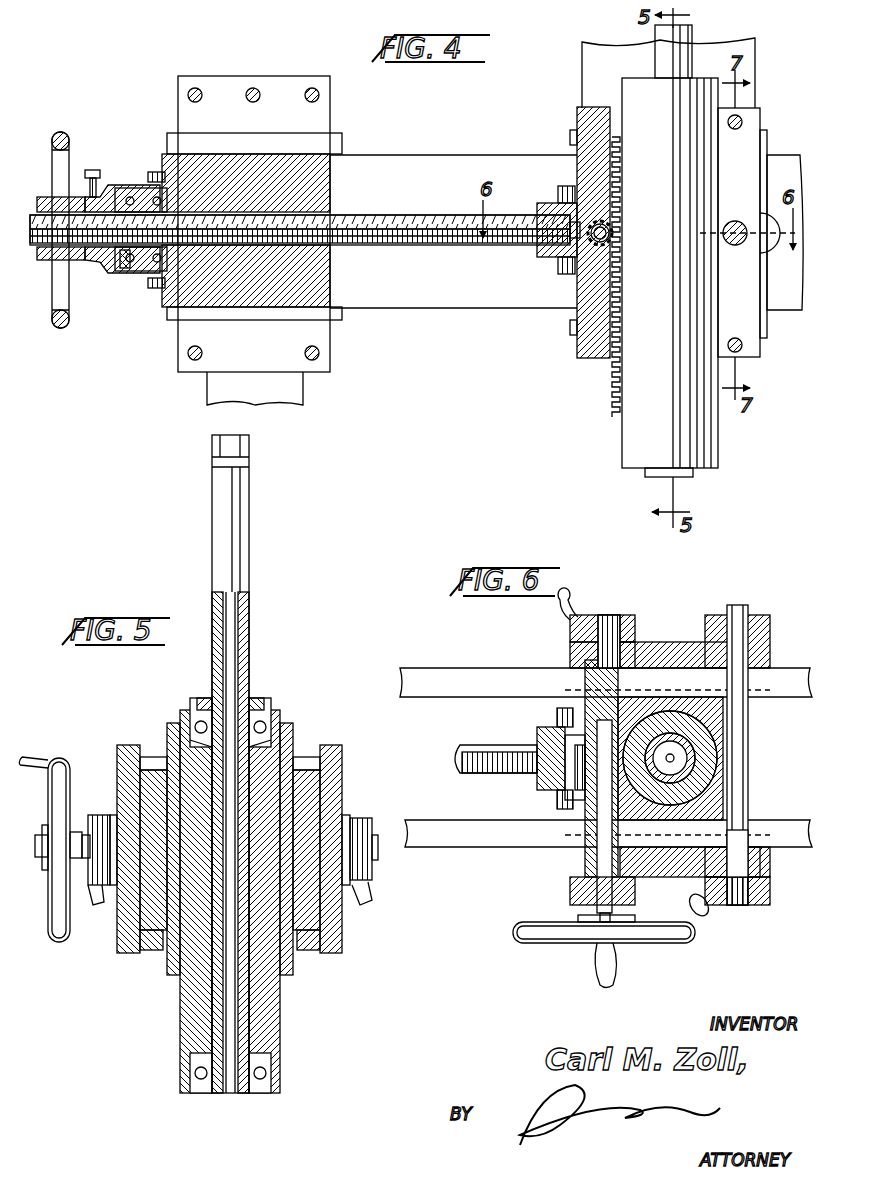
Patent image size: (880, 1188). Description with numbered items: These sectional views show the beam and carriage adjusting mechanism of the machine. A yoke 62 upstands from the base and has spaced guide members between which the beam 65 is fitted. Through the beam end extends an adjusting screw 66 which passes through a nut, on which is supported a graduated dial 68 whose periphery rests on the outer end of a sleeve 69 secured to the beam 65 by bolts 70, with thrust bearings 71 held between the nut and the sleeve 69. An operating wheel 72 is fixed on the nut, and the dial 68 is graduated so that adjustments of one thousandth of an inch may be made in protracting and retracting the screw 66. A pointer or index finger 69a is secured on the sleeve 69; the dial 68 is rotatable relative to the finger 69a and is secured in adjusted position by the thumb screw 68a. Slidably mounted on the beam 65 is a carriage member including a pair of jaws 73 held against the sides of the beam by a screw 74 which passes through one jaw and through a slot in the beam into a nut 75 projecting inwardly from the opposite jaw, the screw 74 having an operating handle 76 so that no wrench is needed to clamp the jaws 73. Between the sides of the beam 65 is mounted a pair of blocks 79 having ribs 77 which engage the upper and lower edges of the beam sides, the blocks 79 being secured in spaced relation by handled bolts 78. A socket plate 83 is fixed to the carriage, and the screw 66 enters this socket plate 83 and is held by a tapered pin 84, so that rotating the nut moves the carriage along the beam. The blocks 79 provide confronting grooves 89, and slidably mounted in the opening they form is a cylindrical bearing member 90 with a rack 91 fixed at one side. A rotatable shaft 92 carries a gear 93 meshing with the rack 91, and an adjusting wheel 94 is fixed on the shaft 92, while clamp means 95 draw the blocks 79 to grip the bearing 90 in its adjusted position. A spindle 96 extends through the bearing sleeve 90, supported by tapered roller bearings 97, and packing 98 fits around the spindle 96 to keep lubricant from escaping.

In FIG. 4, the yoke 62 is at (207, 375).
In FIG. 4, the beam 65 is at (478, 310).
In FIG. 5, the beam 65 is at (300, 805).
In FIG. 6, the beam 65 is at (422, 668).
In FIG. 4, the adjusting screw 66 is at (123, 262).
In FIG. 4, the graduated dial 68 is at (90, 262).
In FIG. 4, the thumb screw 68a is at (92, 185).
In FIG. 4, the sleeve 69 is at (132, 190).
In FIG. 4, the pointer or index finger 69a is at (94, 172).
In FIG. 4, the bolts 70 is at (178, 176).
In FIG. 4, the thrust bearings 71 is at (130, 262).
In FIG. 4, the operating wheel 72 is at (56, 140).
In FIG. 5, the jaws 73 is at (128, 782).
In FIG. 4, the screw 74 is at (725, 240).
In FIG. 6, the screw 74 is at (770, 870).
In FIG. 6, the nut 75 is at (735, 650).
In FIG. 6, the operating handle 76 is at (707, 914).
In FIG. 5, the ribs 77 is at (155, 758).
In FIG. 4, the handled bolts 78 is at (742, 122).
In FIG. 4, the blocks 79 is at (590, 343).
In FIG. 5, the blocks 79 is at (152, 935).
In FIG. 4, the socket plate 83 is at (537, 255).
In FIG. 6, the socket plate 83 is at (537, 745).
In FIG. 4, the tapered pin 84 is at (550, 235).
In FIG. 6, the tapered pin 84 is at (545, 740).
In FIG. 6, the grooves 89 is at (662, 718).
In FIG. 4, the cylindrical bearing member 90 is at (705, 448).
In FIG. 5, the cylindrical bearing member 90 is at (265, 1005).
In FIG. 6, the cylindrical bearing member 90 is at (700, 742).
In FIG. 4, the rack 91 is at (613, 390).
In FIG. 6, the rack 91 is at (578, 798).
In FIG. 4, the rotatable shaft 92 is at (608, 232).
In FIG. 6, the rotatable shaft 92 is at (600, 858).
In FIG. 4, the gear 93 is at (612, 225).
In FIG. 6, the gear 93 is at (565, 770).
In FIG. 5, the adjusting wheel 94 is at (56, 940).
In FIG. 6, the adjusting wheel 94 is at (515, 930).
In FIG. 5, the clamp means 95 is at (368, 888).
In FIG. 6, the clamp means 95 is at (610, 626).
In FIG. 4, the spindle 96 is at (690, 50).
In FIG. 5, the spindle 96 is at (247, 665).
In FIG. 6, the spindle 96 is at (682, 758).
In FIG. 5, the tapered roller bearings 97 is at (268, 735).
In FIG. 5, the packing 98 is at (265, 705).